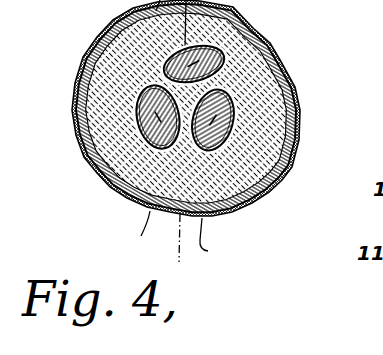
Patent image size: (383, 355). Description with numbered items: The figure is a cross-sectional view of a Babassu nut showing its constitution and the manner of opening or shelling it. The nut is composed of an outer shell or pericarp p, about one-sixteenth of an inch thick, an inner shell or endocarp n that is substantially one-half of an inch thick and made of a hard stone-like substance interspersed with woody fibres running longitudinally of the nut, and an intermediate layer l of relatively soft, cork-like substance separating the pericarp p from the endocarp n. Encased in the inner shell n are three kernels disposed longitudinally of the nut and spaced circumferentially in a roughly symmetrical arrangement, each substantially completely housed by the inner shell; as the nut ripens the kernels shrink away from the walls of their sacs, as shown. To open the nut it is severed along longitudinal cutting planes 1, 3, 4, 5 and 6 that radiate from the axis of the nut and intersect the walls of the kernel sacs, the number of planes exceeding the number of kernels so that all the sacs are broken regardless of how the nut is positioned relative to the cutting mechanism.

The cutting plane 1 is at (90, 43).
The cutting plane 3 is at (222, 86).
The cutting plane 4 is at (292, 172).
The cutting plane 5 is at (177, 251).
The cutting plane 6 is at (136, 130).
The outer shell or pericarp p is at (122, 192).
The inner shell (endocarp) n is at (143, 235).
The intermediate layer l is at (208, 239).